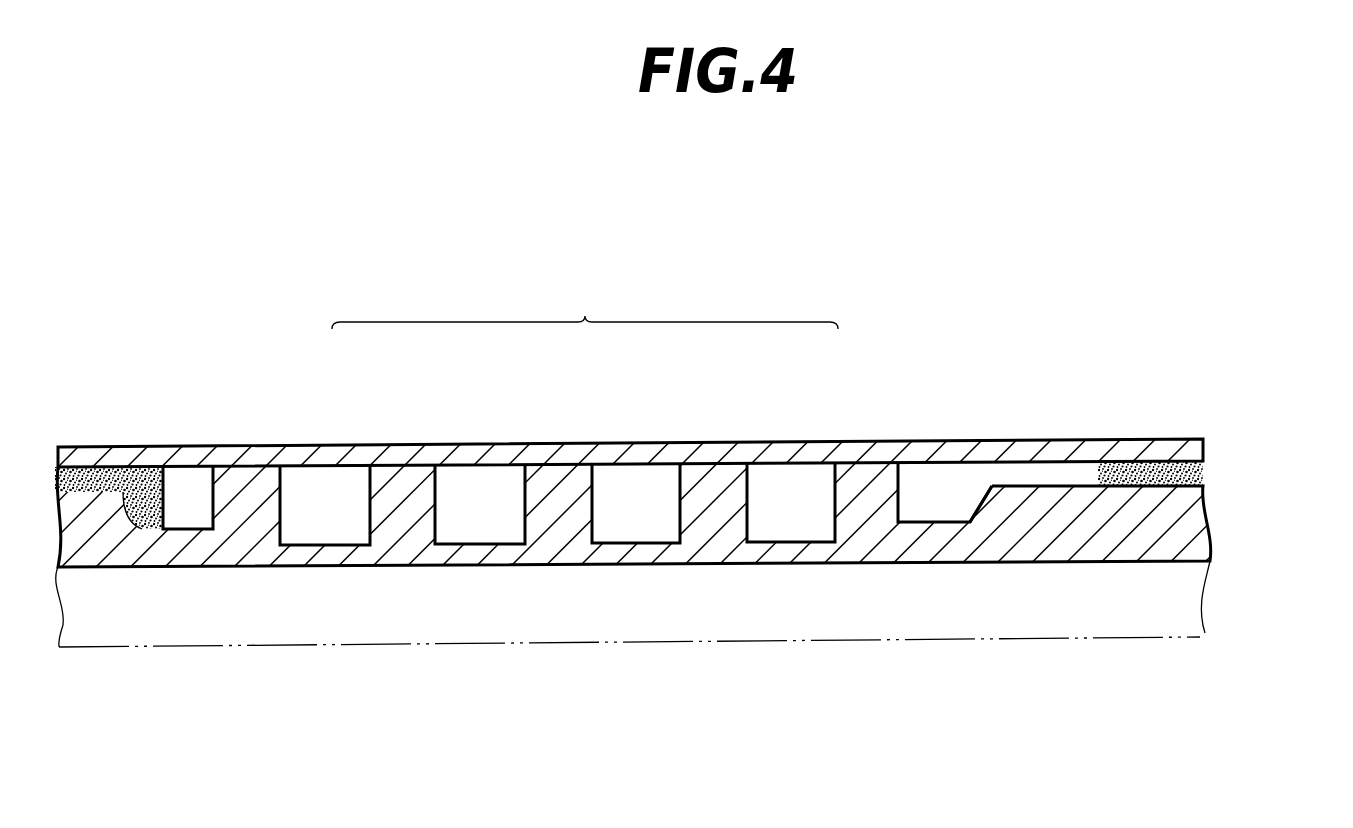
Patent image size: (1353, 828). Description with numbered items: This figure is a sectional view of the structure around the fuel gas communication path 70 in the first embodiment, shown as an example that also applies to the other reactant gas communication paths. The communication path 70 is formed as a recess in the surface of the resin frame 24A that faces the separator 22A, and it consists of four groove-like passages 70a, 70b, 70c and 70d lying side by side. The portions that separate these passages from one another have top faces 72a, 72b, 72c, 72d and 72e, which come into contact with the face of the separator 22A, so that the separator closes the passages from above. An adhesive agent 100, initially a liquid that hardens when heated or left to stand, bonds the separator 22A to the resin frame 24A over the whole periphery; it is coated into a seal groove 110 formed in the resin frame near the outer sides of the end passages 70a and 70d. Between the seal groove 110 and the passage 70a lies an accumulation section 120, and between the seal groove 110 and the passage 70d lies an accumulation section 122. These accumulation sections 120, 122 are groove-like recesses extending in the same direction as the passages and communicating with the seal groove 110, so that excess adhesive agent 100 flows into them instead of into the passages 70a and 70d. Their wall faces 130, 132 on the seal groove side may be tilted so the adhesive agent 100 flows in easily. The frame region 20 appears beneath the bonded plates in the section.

The substrate 20 is at (1187, 597).
The separator 22A is at (1193, 450).
The resin frame 24A is at (1202, 524).
The communication path 70 is at (559, 413).
The passage 70a is at (315, 482).
The passage 70b is at (470, 481).
The passage 70c is at (630, 480).
The passage 70d is at (786, 480).
The top face 72a is at (242, 466).
The top face 72b is at (397, 466).
The top face 72c is at (552, 464).
The top face 72d is at (702, 463).
The top face 72e is at (857, 462).
The adhesive agent 100 is at (143, 464).
The seal groove 110 is at (78, 488).
The accumulation section 120 is at (185, 512).
The accumulation section 122 is at (937, 508).
The wall face 130 is at (171, 462).
The wall face 132 is at (978, 502).